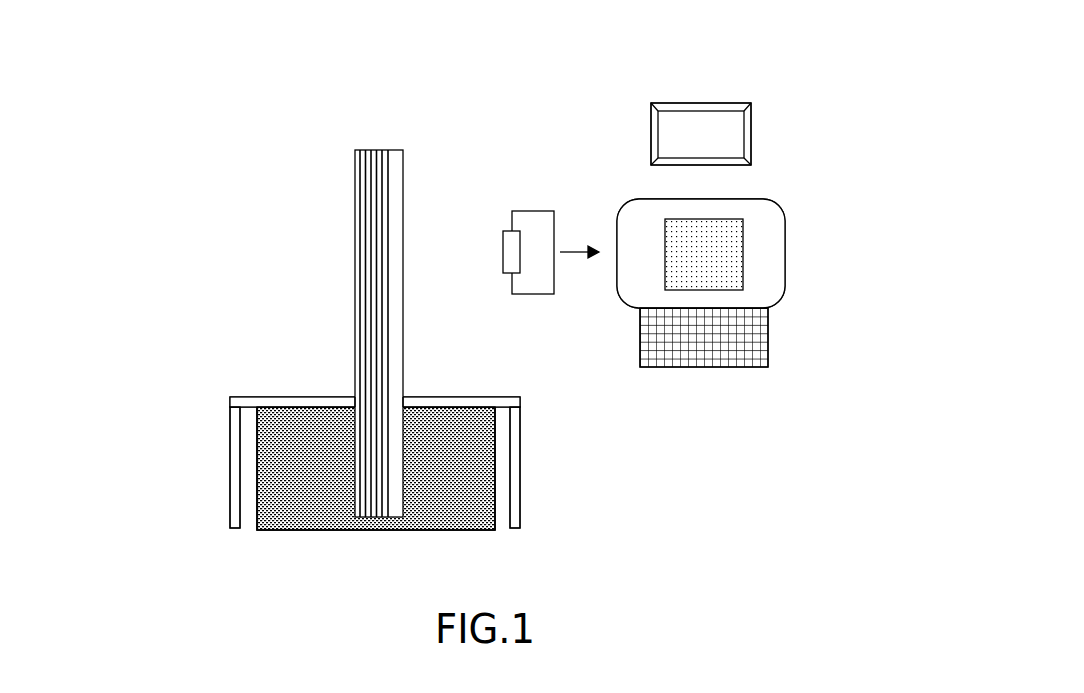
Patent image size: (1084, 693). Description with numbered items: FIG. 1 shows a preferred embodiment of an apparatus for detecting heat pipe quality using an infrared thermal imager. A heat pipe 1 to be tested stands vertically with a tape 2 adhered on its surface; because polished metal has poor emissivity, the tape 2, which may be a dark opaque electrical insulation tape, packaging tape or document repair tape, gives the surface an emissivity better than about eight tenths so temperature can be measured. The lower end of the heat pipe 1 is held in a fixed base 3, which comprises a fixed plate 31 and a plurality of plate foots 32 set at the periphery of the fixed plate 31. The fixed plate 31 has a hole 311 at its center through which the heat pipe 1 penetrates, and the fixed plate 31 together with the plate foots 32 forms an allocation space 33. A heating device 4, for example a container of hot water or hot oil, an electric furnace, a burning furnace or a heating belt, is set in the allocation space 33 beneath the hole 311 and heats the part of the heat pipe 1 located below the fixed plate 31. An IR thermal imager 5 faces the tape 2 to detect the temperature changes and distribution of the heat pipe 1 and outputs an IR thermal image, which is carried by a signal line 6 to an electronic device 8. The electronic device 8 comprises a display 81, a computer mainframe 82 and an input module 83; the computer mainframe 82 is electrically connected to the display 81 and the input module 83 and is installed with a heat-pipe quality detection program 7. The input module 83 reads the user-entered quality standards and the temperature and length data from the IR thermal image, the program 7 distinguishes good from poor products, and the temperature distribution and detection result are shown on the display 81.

The heat pipe 1 is at (355, 201).
The tape 2 is at (395, 278).
The fixed base 3 is at (239, 355).
The fixed plate 31 is at (289, 397).
The hole 311 is at (403, 397).
The plate foots 32 is at (230, 467).
The allocation space 33 is at (501, 436).
The heating device 4 is at (485, 484).
The IR thermal imager 5 is at (533, 211).
The signal line 6 is at (569, 256).
The heat-pipe quality detection program 7 is at (743, 253).
The electronic device 8 is at (786, 168).
The display 81 is at (700, 103).
The computer mainframe 82 is at (639, 199).
The input module 83 is at (703, 367).